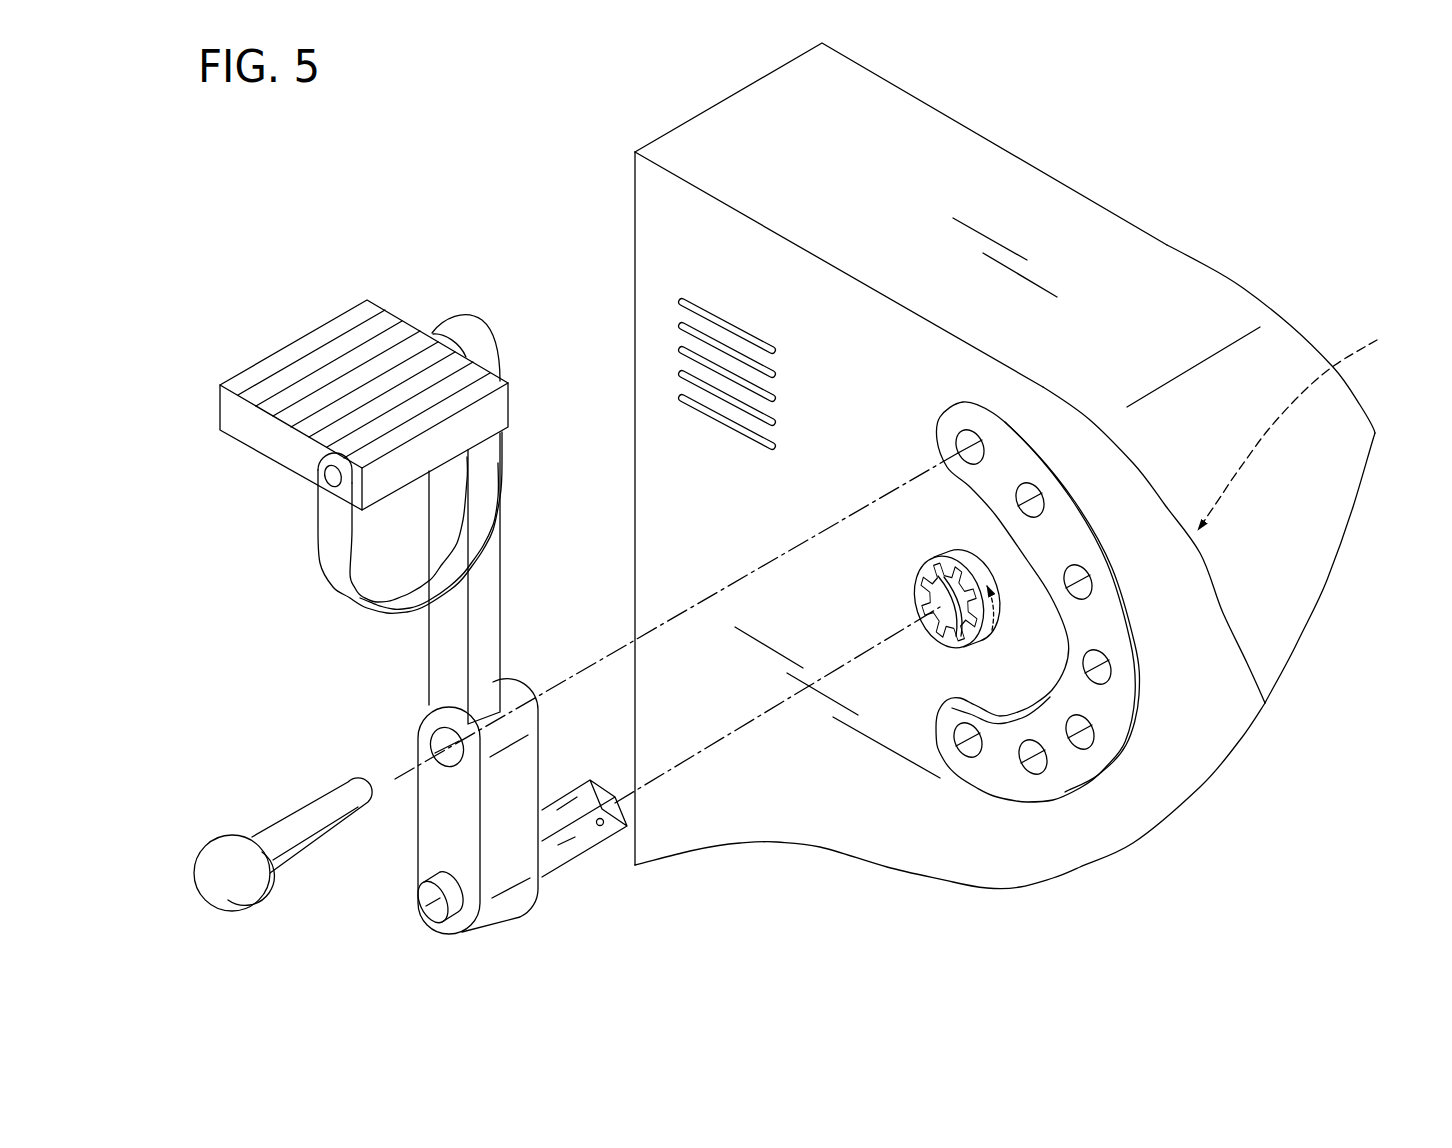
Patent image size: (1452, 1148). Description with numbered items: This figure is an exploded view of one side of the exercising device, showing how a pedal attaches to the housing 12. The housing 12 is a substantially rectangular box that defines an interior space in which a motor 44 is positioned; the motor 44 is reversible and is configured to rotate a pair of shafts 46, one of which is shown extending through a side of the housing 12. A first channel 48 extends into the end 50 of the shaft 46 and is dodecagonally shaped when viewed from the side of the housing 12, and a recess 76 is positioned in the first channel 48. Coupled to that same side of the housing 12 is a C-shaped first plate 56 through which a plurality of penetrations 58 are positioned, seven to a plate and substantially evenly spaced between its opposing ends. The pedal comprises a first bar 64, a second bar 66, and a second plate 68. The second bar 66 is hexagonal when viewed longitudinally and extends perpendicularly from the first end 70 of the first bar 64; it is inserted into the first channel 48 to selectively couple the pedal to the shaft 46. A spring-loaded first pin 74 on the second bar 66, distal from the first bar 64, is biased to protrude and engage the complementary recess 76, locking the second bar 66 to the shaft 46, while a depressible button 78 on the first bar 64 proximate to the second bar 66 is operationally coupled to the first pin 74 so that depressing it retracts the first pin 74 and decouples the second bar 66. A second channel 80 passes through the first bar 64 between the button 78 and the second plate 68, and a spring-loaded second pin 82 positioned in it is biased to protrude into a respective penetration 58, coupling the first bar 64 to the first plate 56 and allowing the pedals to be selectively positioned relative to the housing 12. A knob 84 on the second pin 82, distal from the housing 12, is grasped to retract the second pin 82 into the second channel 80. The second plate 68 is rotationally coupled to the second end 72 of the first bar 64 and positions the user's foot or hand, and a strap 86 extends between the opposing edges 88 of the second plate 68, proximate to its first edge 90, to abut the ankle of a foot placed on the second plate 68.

The housing 12 is at (1007, 130).
The motor 44 is at (1303, 419).
The shaft 46 is at (973, 547).
The first channel 48 is at (950, 605).
The end 50 is at (943, 650).
The first plate 56 is at (1100, 507).
The penetration 58 is at (1088, 757).
The first bar 64 is at (488, 597).
The second bar 66 is at (582, 857).
The second plate 68 is at (403, 389).
The first end 70 is at (454, 822).
The second end 72 is at (480, 320).
The first pin 74 is at (603, 827).
The recess 76 is at (993, 640).
The button 78 is at (421, 903).
The second channel 80 is at (433, 740).
The second pin 82 is at (290, 822).
The knob 84 is at (223, 873).
The strap 86 is at (328, 548).
The opposing edges 88 is at (260, 440).
The first edge 90 is at (508, 407).